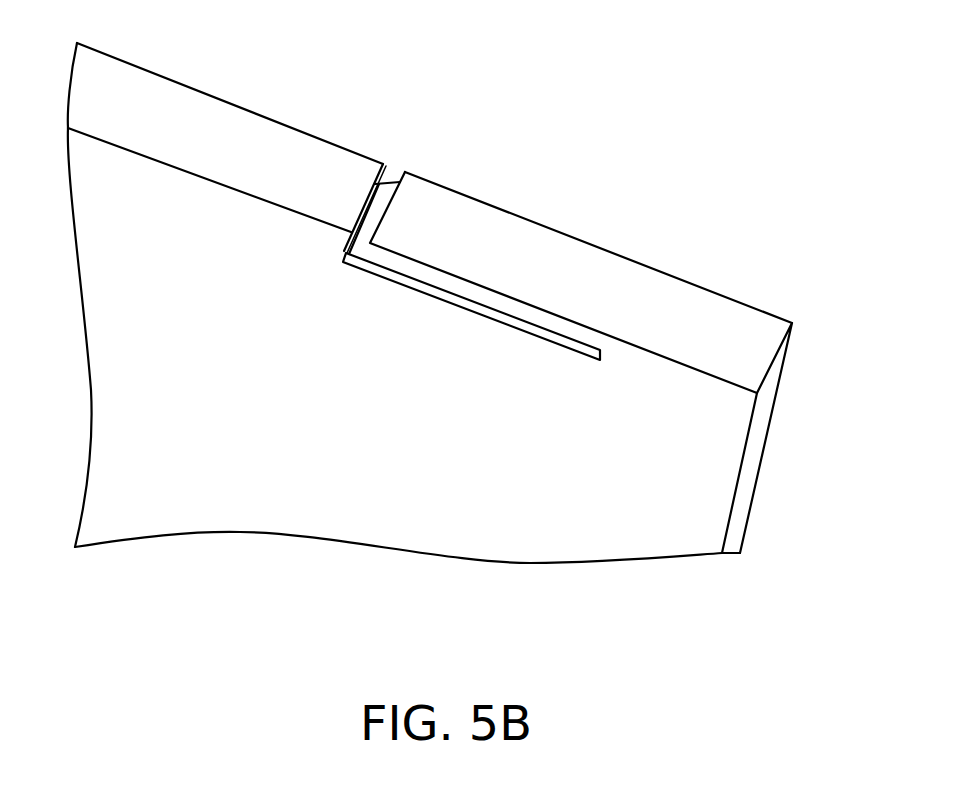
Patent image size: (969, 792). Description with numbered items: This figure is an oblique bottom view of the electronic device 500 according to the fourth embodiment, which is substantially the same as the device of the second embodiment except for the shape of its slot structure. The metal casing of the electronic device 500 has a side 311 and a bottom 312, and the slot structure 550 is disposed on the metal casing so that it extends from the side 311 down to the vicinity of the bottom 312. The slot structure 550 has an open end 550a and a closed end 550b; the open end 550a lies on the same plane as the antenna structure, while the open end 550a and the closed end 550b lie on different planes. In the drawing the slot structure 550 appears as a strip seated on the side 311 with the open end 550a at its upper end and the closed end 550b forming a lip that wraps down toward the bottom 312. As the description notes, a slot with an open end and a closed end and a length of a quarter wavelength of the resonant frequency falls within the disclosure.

The electronic device 500 is at (822, 617).
The side 311 is at (247, 131).
The bottom 312 is at (380, 507).
The slot structure 550 is at (445, 297).
The open end 550a is at (381, 184).
The closed end 550b is at (590, 344).